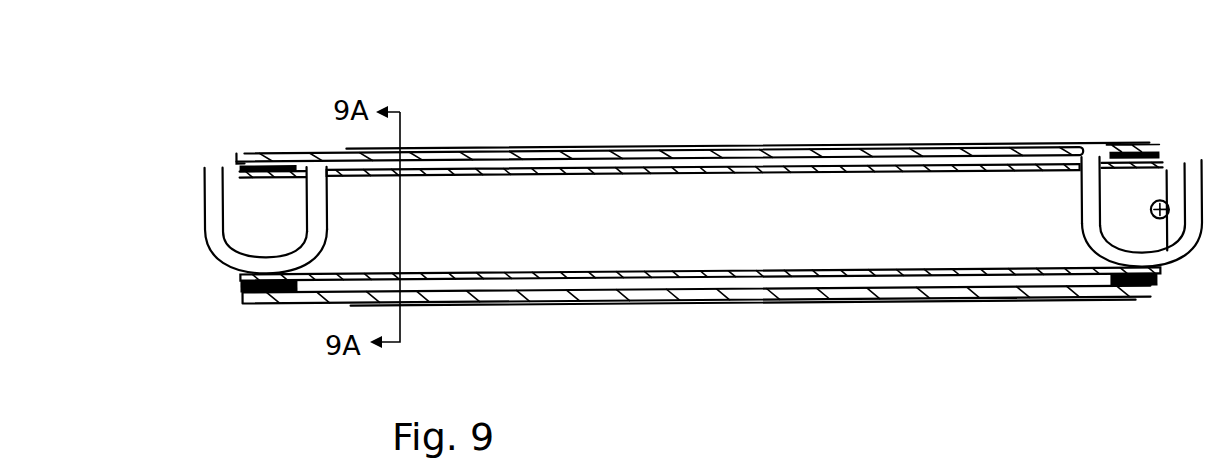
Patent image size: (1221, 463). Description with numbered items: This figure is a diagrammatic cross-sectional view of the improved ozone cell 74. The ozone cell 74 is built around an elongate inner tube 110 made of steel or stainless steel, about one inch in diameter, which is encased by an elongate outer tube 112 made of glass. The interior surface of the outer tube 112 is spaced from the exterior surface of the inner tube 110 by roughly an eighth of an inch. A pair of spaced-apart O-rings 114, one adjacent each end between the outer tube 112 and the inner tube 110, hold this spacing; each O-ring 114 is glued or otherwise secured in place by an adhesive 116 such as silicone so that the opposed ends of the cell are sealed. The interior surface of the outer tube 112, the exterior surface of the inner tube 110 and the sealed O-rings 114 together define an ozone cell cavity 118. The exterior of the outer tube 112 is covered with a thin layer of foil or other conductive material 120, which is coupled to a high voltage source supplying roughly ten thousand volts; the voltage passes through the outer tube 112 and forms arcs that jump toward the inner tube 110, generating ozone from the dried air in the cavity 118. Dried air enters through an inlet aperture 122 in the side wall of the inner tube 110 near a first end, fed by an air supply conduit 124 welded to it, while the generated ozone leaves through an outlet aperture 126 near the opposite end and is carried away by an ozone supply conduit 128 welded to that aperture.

The ozone cell 74 is at (972, 122).
The inner tube 110 is at (588, 267).
The outer tube 112 is at (740, 158).
The O-ring 114 is at (297, 291).
The adhesive 116 is at (262, 162).
The ozone cell cavity 118 is at (642, 162).
The conductive material 120 is at (850, 146).
The inlet aperture 122 is at (1092, 167).
The air supply conduit 124 is at (1085, 232).
The outlet aperture 126 is at (315, 167).
The ozone supply conduit 128 is at (238, 278).